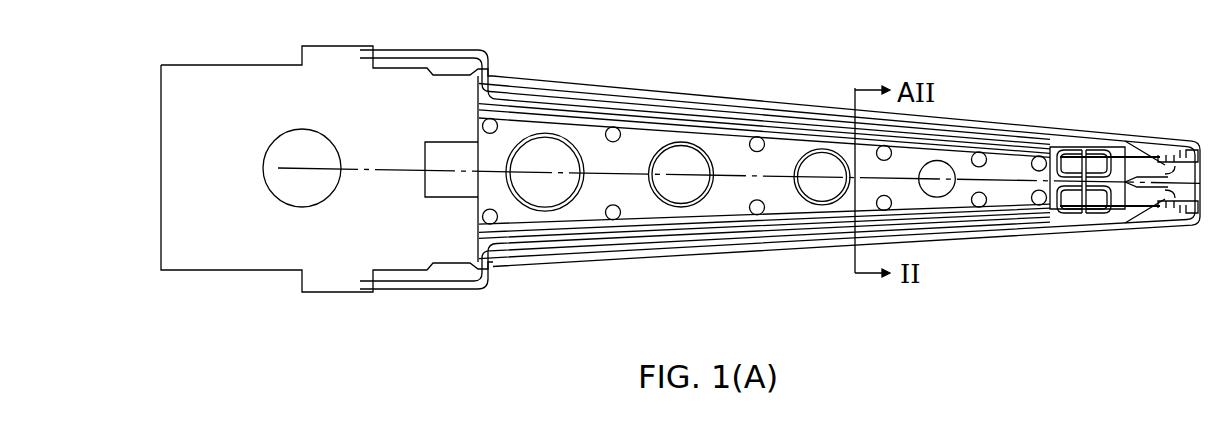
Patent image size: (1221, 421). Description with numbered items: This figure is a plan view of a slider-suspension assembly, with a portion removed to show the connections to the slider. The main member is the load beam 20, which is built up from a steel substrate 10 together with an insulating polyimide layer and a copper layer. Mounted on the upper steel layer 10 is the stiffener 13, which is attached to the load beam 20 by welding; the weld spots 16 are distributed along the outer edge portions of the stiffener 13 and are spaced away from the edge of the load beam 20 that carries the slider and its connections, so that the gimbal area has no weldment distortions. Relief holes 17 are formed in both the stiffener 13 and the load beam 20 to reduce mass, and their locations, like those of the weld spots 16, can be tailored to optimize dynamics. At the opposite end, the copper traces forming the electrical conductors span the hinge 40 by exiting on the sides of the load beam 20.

The steel substrate 10 is at (632, 87).
The stiffener 13 is at (708, 115).
The weld spots 16 is at (760, 217).
The relief holes 17 is at (730, 225).
The load beam 20 is at (839, 179).
The hinge 40 is at (438, 112).